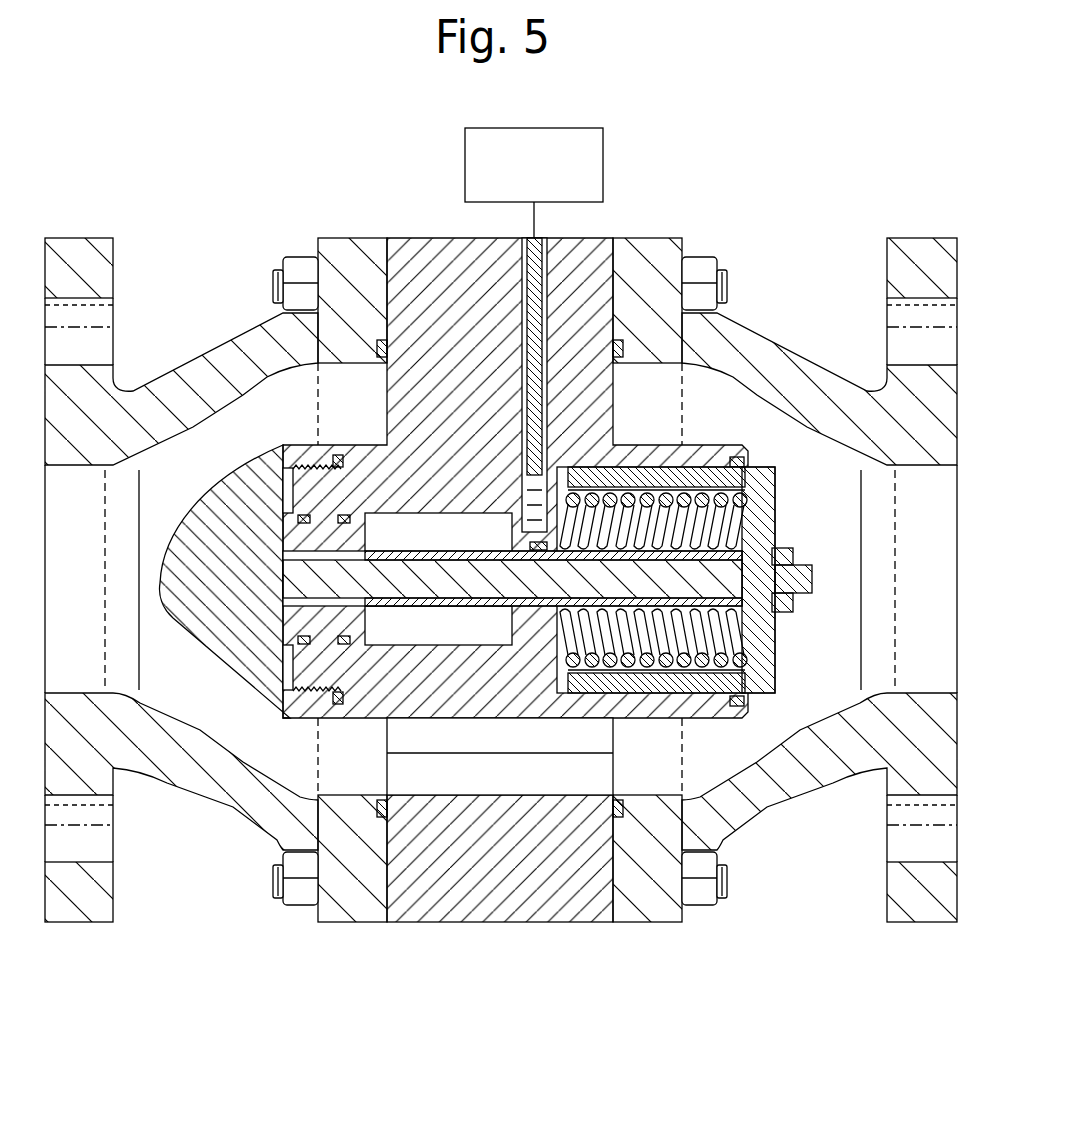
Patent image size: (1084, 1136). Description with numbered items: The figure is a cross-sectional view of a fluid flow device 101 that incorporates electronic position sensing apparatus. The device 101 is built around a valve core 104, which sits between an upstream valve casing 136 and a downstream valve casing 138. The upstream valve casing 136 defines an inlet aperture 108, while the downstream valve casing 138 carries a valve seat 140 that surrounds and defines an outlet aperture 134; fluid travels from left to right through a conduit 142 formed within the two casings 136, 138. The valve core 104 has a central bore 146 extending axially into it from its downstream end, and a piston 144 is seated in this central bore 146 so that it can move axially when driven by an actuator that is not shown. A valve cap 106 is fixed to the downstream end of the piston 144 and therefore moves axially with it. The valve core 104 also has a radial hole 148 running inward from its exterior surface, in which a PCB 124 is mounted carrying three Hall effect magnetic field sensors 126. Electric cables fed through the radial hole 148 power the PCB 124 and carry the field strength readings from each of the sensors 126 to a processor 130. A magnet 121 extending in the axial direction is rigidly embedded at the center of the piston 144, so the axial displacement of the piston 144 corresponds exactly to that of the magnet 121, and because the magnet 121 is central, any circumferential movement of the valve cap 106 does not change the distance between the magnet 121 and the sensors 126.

The fluid flow device 101 is at (799, 213).
The valve core 104 is at (555, 862).
The valve cap 106 is at (650, 473).
The inlet aperture 108 is at (85, 575).
The magnet 121 is at (470, 585).
The PCB 124 is at (537, 292).
The magnetic field sensors 126 is at (530, 460).
The processor 130 is at (605, 136).
The outlet aperture 134 is at (877, 660).
The upstream valve casing 136 is at (82, 760).
The downstream valve casing 138 is at (927, 757).
The valve seat 140 is at (927, 685).
The conduit 142 is at (227, 440).
The piston 144 is at (700, 557).
The central bore 146 is at (407, 630).
The radial hole 148 is at (513, 253).